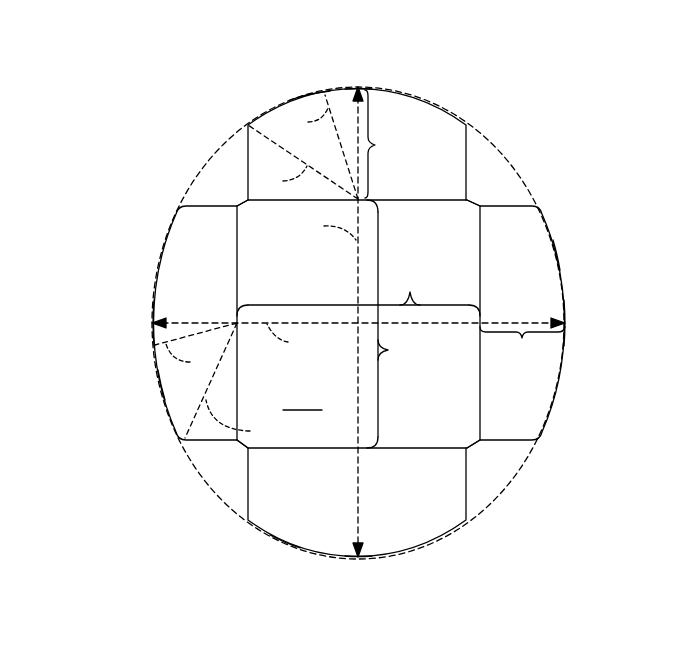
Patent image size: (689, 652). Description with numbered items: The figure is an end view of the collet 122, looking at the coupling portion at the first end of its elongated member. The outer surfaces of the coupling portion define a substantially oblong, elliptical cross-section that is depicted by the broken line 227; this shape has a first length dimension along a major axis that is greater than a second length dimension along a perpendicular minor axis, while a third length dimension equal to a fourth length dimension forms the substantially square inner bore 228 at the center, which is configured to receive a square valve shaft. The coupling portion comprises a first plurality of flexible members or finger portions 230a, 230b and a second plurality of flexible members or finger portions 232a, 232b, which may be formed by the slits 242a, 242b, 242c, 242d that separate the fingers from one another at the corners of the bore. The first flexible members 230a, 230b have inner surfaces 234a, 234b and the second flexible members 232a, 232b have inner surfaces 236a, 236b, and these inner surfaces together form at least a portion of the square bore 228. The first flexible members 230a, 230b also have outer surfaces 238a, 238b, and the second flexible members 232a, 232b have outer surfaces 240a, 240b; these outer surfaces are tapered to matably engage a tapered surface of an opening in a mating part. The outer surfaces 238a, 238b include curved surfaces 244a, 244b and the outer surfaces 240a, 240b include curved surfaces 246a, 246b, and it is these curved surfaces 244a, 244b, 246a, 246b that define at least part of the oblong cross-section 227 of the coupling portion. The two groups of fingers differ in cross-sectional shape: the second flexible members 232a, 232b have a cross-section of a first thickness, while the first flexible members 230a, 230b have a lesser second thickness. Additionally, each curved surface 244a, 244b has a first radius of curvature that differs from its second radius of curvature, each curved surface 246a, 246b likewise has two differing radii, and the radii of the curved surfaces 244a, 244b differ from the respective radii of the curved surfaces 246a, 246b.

The collet 122 is at (135, 46).
The broken line 227 is at (493, 142).
The square inner bore 228 is at (358, 324).
The flexible member 230a is at (545, 371).
The flexible member 230b is at (175, 408).
The flexible member 232a is at (433, 125).
The flexible member 232b is at (417, 530).
The inner surface 234a is at (478, 370).
The inner surface 234b is at (238, 296).
The inner surface 236a is at (450, 202).
The inner surface 236b is at (388, 446).
The outer surface 238a is at (568, 310).
The outer surface 238b is at (158, 256).
The outer surface 240a is at (303, 96).
The outer surface 240b is at (284, 542).
The slit 242a is at (246, 197).
The slit 242b is at (471, 200).
The slit 242c is at (473, 443).
The slit 242d is at (240, 445).
The curved outer surface 244a is at (558, 262).
The curved outer surface 244b is at (158, 378).
The curved outer surface 246a is at (379, 87).
The curved outer surface 246b is at (393, 557).